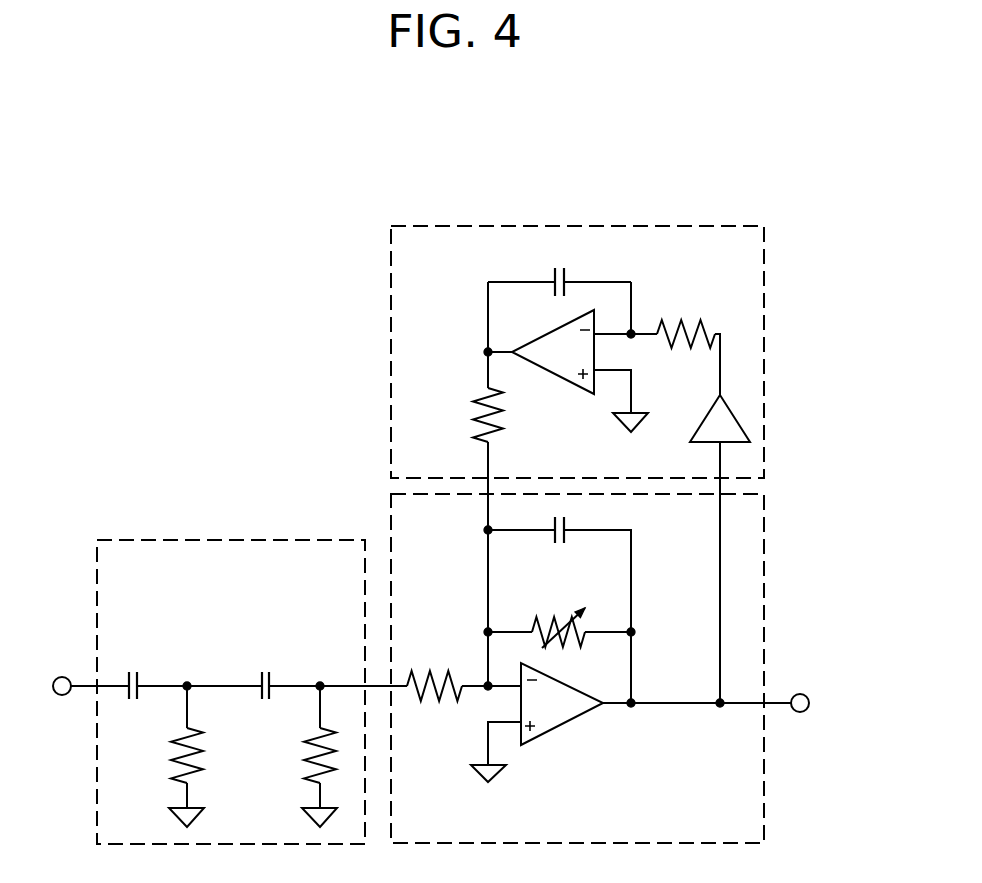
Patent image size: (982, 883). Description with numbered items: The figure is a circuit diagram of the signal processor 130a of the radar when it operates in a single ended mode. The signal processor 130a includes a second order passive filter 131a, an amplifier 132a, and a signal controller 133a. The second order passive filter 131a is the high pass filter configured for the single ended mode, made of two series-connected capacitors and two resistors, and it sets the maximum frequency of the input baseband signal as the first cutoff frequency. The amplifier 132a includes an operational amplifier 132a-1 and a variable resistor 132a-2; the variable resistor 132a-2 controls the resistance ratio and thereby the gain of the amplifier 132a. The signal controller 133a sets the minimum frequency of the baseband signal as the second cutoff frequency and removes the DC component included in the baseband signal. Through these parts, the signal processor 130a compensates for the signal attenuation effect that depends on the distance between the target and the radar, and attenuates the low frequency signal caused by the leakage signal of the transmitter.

The signal processor 130a is at (824, 189).
The second order passive filter 131a is at (228, 540).
The amplifier 132a is at (631, 668).
The operational amplifier 132a-1 is at (562, 727).
The variable resistor 132a-2 is at (563, 615).
The signal controller 133a is at (764, 341).